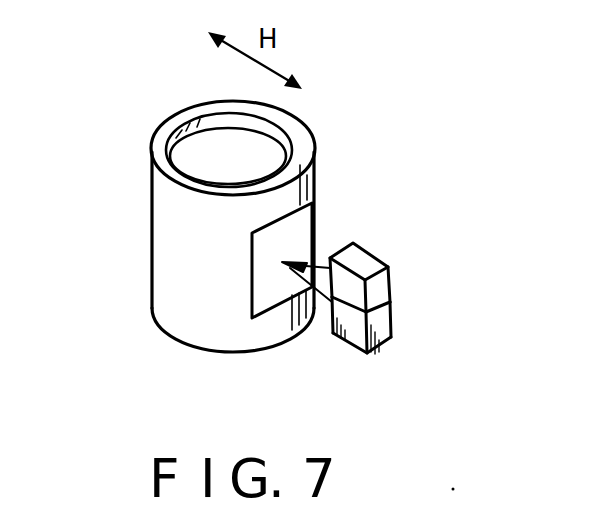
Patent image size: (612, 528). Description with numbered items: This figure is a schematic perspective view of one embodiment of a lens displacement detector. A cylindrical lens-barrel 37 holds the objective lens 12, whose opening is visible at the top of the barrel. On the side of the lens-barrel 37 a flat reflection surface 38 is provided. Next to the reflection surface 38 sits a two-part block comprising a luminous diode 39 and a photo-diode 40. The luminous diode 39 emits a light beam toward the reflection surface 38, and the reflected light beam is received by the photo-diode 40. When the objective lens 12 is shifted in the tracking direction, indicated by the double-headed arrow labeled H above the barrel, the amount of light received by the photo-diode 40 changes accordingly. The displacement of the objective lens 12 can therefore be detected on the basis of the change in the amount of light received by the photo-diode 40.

The objective lens 12 is at (260, 148).
The lens-barrel 37 is at (168, 281).
The reflection surface 38 is at (314, 207).
The luminous diode 39 is at (370, 258).
The photo-diode 40 is at (387, 323).